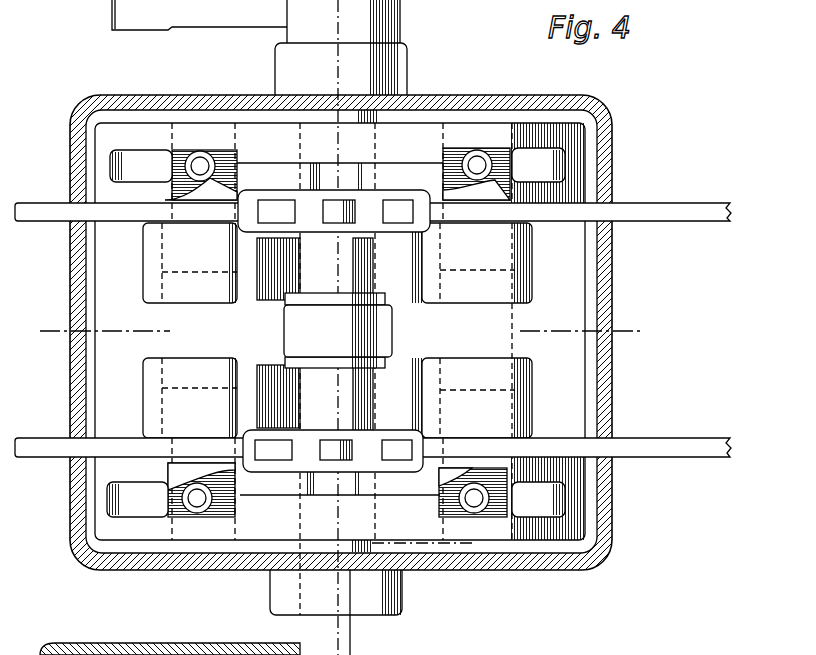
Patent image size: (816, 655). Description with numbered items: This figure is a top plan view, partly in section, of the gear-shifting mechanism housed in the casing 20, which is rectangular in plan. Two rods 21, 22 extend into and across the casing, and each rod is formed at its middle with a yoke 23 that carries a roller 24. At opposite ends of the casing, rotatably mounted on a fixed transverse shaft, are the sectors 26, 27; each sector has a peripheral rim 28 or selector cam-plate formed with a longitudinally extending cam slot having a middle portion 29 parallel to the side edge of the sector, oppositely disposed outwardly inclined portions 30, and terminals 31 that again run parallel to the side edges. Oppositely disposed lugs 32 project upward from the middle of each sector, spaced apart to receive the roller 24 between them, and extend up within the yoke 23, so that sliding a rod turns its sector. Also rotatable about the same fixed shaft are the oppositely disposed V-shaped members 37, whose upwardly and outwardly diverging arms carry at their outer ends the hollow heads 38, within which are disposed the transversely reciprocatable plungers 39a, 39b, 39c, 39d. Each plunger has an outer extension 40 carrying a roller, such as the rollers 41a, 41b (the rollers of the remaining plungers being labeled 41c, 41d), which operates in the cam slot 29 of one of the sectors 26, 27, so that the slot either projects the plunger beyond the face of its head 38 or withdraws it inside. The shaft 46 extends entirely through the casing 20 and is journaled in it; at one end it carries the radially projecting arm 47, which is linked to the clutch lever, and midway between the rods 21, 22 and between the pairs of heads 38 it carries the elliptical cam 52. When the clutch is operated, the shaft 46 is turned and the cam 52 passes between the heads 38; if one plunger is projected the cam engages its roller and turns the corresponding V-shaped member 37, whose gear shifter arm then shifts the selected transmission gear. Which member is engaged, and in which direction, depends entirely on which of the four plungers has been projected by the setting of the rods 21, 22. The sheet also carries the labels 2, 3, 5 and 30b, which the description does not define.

The section line 2 is at (335, 334).
The shaft 3 is at (336, 327).
The guide block pin 5 is at (475, 427).
The casing 20 is at (362, 47).
The rod 21 is at (662, 222).
The rod 22 is at (671, 452).
The yoke 23 is at (404, 230).
The roller 24 is at (334, 210).
The sector 26 is at (445, 540).
The sector 27 is at (472, 122).
The peripheral rim 28 is at (502, 137).
The middle portion of cam slot 29 is at (270, 180).
The outwardly inclined portion 30 is at (225, 145).
The pivot pin 30b is at (230, 481).
The terminal 31 is at (336, 332).
The lug 32 is at (315, 217).
The V-shaped member 37 is at (326, 335).
The hollow head 38 is at (498, 366).
The plunger 39a is at (180, 258).
The plunger 39b is at (472, 263).
The plunger 39c is at (213, 387).
The plunger 39d is at (472, 398).
The extension 40 is at (233, 180).
The roller 41a is at (201, 178).
The roller 41b is at (476, 176).
The lever 41c is at (201, 501).
The lever 41d is at (455, 508).
The shaft 46 is at (329, 413).
The radially projecting arm 47 is at (221, 20).
The cam 52 is at (362, 326).